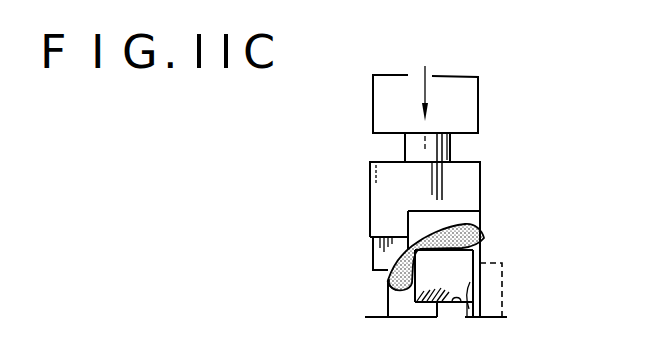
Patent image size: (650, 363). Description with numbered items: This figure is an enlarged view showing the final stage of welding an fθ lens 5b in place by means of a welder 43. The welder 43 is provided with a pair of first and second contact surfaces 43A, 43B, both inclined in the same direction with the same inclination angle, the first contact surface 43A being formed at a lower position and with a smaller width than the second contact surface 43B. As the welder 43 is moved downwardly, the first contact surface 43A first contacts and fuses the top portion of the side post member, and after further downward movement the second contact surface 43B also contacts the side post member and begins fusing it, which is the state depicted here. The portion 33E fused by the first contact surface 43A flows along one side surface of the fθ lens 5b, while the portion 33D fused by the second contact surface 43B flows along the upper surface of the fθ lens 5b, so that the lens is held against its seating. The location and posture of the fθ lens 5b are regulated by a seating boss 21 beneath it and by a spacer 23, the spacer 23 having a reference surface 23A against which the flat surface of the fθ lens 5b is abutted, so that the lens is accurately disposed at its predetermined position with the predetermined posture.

The welder 43 is at (482, 180).
The first contact surface 43A is at (373, 249).
The second contact surface 43B is at (483, 215).
The portion fused by the second contact surface 33D is at (486, 238).
The portion fused by the first contact surface 33E is at (388, 278).
The spacer 23 is at (503, 293).
The reference surface 23A is at (469, 313).
The seating boss 21 is at (453, 313).
The fθ lens 5b is at (410, 314).